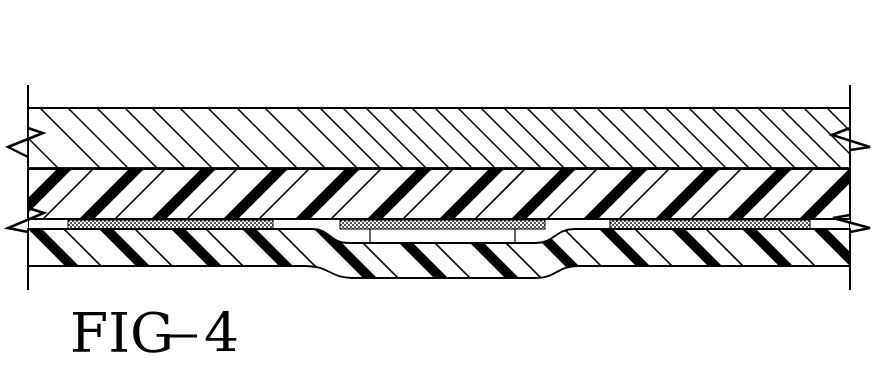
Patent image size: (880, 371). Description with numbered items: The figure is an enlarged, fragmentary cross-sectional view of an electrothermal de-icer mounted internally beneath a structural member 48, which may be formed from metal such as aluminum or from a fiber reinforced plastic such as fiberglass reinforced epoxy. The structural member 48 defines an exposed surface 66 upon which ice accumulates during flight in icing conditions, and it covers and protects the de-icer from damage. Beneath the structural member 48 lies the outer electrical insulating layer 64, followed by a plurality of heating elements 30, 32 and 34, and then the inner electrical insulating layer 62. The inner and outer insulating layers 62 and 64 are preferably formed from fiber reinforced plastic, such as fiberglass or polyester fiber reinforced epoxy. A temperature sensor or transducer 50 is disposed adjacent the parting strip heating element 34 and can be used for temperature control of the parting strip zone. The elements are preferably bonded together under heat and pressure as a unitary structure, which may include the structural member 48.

The structural member 48 is at (88, 142).
The exposed surface 66 is at (284, 108).
The outer electrical insulating layer 64 is at (528, 195).
The heating element 32 is at (214, 222).
The parting strip heating element 34 is at (440, 222).
The heating element 30 is at (658, 222).
The inner electrical insulating layer 62 is at (722, 247).
The temperature sensor 50 is at (456, 237).